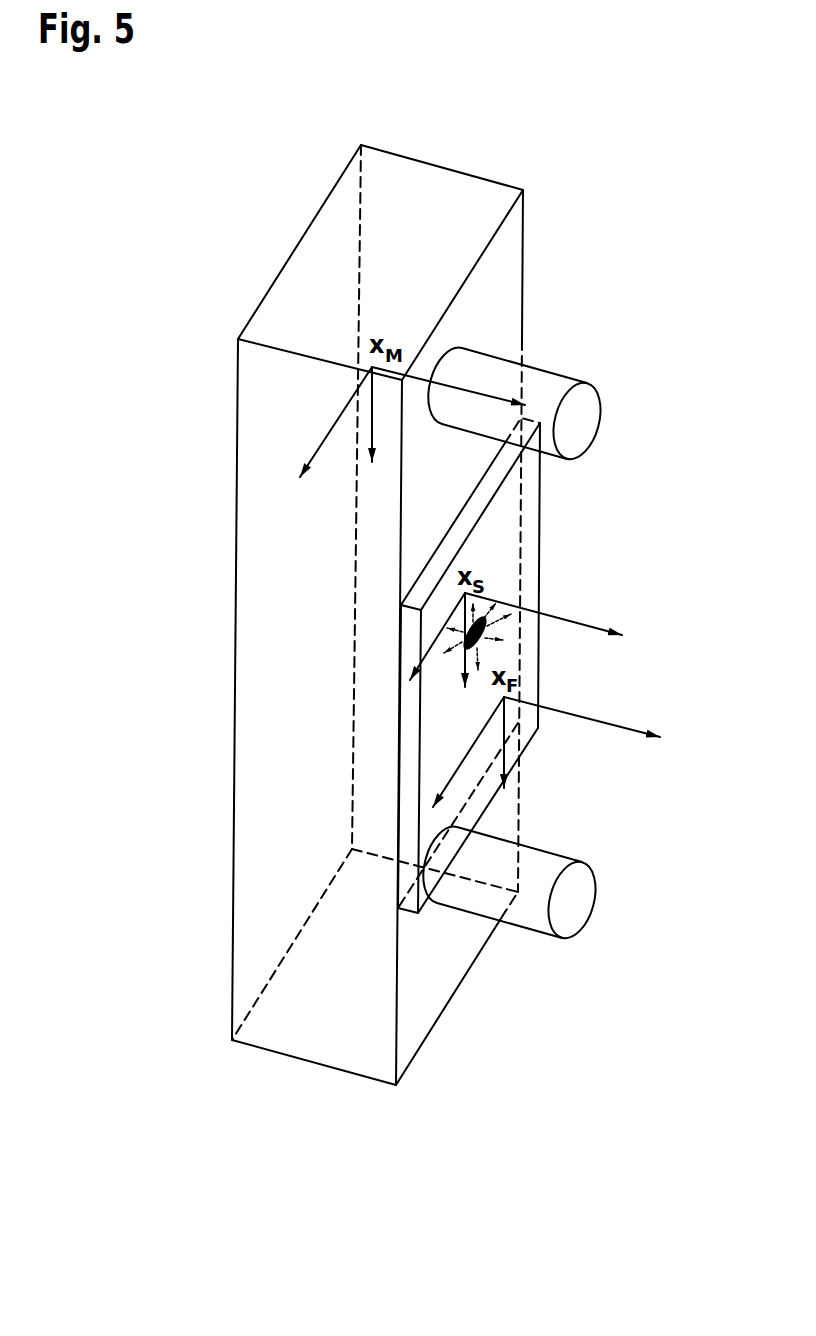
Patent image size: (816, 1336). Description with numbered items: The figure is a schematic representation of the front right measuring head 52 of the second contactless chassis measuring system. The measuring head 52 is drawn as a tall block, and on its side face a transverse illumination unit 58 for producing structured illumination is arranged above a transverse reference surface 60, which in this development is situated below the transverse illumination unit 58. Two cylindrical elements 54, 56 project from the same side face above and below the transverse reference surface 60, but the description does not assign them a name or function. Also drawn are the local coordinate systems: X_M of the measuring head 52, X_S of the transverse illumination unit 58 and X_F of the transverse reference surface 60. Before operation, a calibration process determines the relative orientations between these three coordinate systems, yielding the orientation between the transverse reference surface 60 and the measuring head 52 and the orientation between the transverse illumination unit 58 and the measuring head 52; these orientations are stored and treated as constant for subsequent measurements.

The front right measuring head 52 is at (348, 1107).
The first cylindrical element 54 is at (578, 415).
The second cylindrical element 56 is at (570, 900).
The transverse illumination unit 58 is at (487, 630).
The transverse reference surface 60 is at (530, 517).